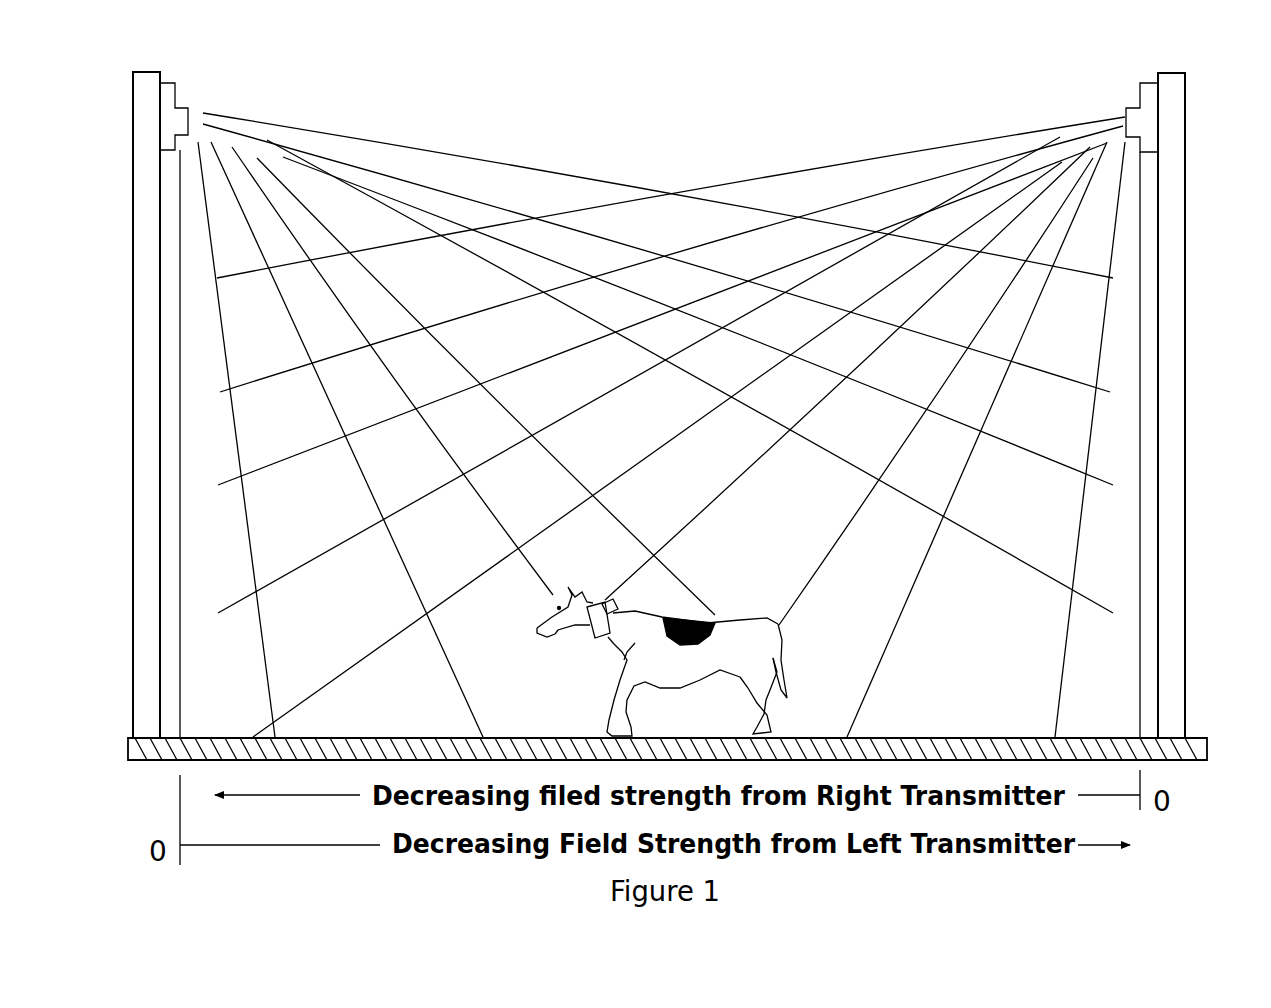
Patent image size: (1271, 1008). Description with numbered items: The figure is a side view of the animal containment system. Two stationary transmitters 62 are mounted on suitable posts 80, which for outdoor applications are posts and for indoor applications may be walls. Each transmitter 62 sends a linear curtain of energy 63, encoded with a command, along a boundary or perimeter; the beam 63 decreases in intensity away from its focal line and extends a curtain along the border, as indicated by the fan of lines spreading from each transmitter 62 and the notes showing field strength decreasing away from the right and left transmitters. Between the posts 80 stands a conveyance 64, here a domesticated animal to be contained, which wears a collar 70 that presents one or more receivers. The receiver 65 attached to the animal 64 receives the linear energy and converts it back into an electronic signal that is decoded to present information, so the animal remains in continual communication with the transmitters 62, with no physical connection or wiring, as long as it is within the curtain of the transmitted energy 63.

The posts 80 is at (142, 107).
The stationary transmitter 62 is at (177, 98).
The linear curtain of energy 63 is at (661, 425).
The conveyance 64 is at (643, 683).
The receiver 65 is at (603, 598).
The collar 70 is at (618, 603).